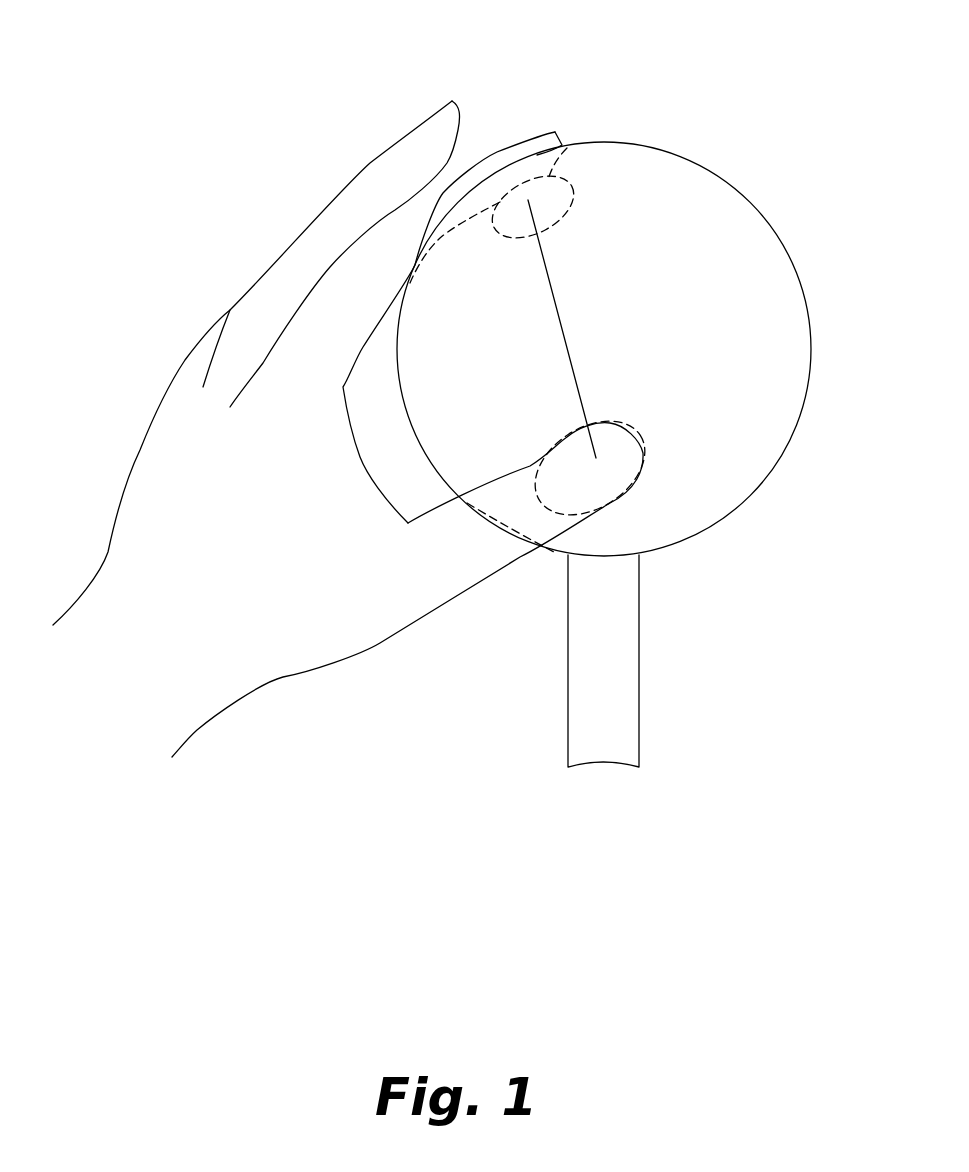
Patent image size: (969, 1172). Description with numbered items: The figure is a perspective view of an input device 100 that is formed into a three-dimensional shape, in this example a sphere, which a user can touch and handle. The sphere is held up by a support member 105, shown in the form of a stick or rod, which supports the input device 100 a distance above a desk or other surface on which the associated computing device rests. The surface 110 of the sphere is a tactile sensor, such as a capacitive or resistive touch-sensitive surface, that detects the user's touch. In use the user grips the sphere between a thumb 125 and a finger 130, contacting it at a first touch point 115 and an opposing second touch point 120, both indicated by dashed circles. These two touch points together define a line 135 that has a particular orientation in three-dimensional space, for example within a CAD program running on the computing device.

The input device 100 is at (633, 406).
The support member 105 is at (618, 713).
The surface 110 is at (715, 285).
The first touch point 115 is at (607, 479).
The second touch point 120 is at (552, 193).
The thumb 125 is at (624, 424).
The finger 130 is at (540, 140).
The line 135 is at (595, 329).